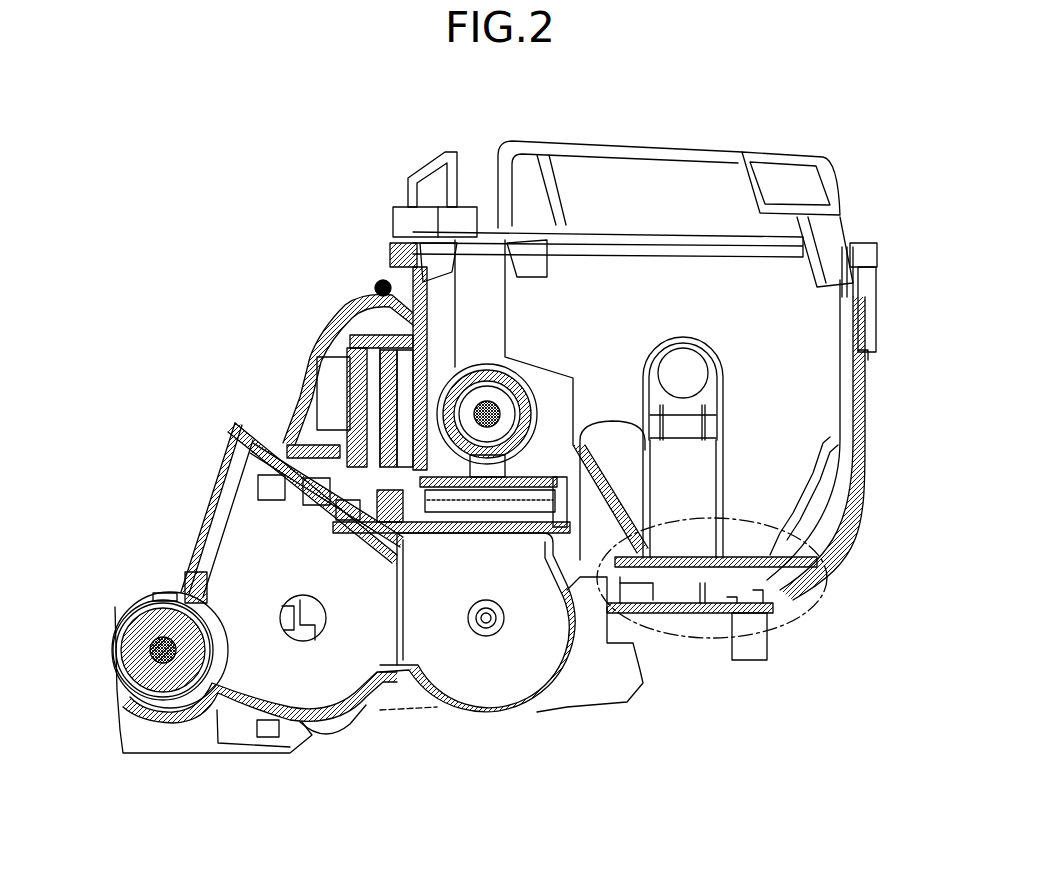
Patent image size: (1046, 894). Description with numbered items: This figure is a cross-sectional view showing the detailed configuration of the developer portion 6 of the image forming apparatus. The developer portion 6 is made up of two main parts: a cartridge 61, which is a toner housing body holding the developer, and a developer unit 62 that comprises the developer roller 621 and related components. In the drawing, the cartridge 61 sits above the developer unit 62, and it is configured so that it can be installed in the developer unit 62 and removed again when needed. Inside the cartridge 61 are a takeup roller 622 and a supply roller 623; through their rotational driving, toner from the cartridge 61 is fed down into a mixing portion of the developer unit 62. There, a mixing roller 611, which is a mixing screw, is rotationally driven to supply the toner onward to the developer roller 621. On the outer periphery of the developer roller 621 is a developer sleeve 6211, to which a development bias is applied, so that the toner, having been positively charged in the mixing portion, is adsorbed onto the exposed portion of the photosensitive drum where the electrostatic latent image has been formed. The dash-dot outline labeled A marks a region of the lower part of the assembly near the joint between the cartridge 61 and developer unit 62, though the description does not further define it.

The developer portion 6 is at (276, 351).
The cartridge 61 is at (776, 155).
The developer unit 62 is at (568, 706).
The mixing roller 611 is at (335, 610).
The developer roller 621 is at (108, 656).
The developer sleeve 6211 is at (162, 590).
The takeup roller 622 is at (692, 372).
The supply roller 623 is at (460, 380).
The region A is at (807, 600).